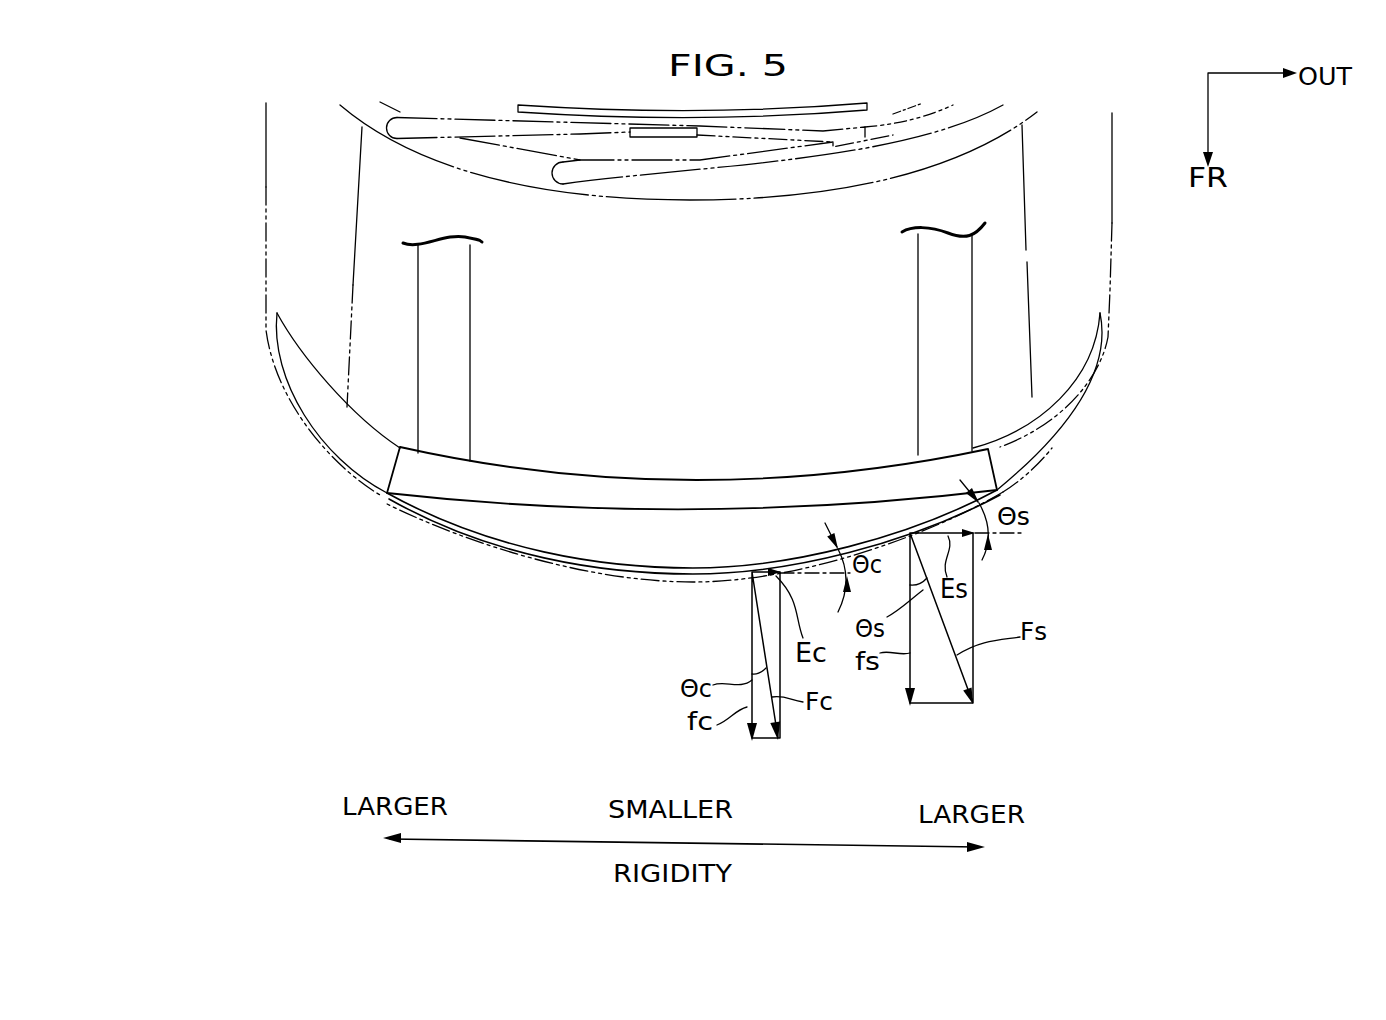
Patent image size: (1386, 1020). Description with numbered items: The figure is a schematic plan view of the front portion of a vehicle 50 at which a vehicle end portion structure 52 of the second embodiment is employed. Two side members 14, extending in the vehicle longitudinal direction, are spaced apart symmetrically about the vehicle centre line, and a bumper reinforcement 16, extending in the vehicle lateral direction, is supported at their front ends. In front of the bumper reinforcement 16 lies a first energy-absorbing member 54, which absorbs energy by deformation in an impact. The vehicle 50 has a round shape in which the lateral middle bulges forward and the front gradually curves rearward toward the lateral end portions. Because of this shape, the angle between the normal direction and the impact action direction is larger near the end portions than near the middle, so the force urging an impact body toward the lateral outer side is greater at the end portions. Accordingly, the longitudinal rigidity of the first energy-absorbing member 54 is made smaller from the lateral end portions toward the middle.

The side member 14 is at (470, 332).
The bumper reinforcement 16 is at (607, 474).
The vehicle 50 is at (263, 158).
The vehicle end portion structure 52 is at (535, 592).
The first energy-absorbing member 54 is at (596, 564).